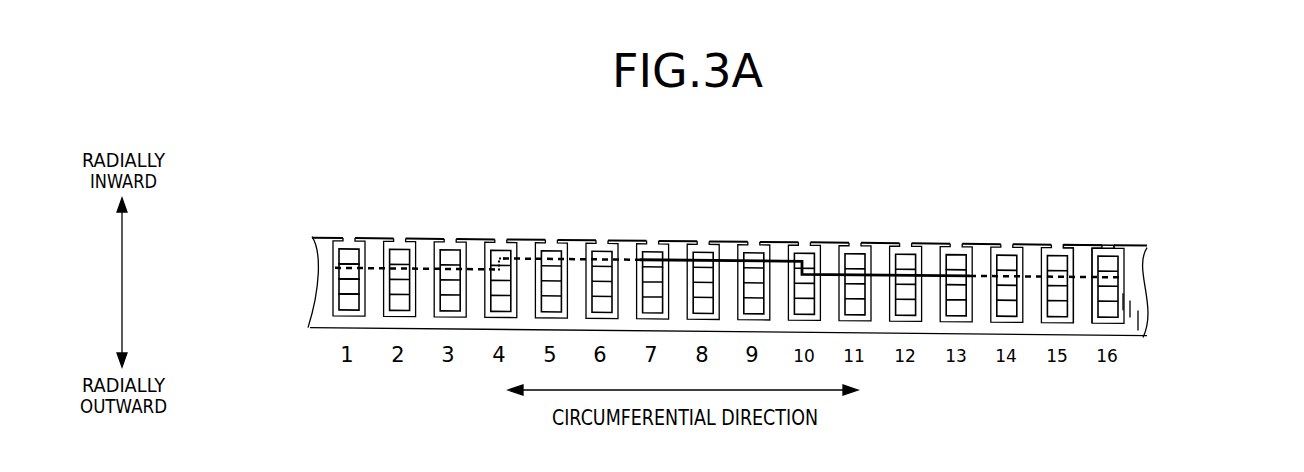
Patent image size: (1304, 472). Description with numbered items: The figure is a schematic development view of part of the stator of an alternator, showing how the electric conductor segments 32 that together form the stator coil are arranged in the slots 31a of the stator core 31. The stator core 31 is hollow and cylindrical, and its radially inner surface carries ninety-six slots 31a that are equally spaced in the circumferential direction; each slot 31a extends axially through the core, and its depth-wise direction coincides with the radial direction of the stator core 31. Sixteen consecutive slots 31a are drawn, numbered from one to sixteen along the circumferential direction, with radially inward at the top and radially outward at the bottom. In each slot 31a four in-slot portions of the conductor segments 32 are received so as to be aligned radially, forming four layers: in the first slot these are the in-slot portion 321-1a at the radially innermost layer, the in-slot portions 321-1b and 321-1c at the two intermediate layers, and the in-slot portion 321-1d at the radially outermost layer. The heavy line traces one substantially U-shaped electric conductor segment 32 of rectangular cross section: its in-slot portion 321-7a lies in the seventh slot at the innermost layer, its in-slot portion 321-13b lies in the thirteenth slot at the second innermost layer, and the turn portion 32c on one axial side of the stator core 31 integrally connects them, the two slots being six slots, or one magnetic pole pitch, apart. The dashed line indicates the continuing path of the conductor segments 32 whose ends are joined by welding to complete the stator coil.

The stator core 31 is at (1140, 292).
The slot 31a is at (1105, 247).
The electric conductor segment 32 is at (878, 276).
The turn portion 32c is at (777, 257).
The in-slot portion 321-1a is at (338, 250).
The in-slot portion 321-1b is at (340, 269).
The in-slot portion 321-1c is at (342, 287).
The in-slot portion 321-1d is at (342, 304).
The in-slot portion 321-7a is at (650, 256).
The in-slot portion 321-13b is at (953, 272).